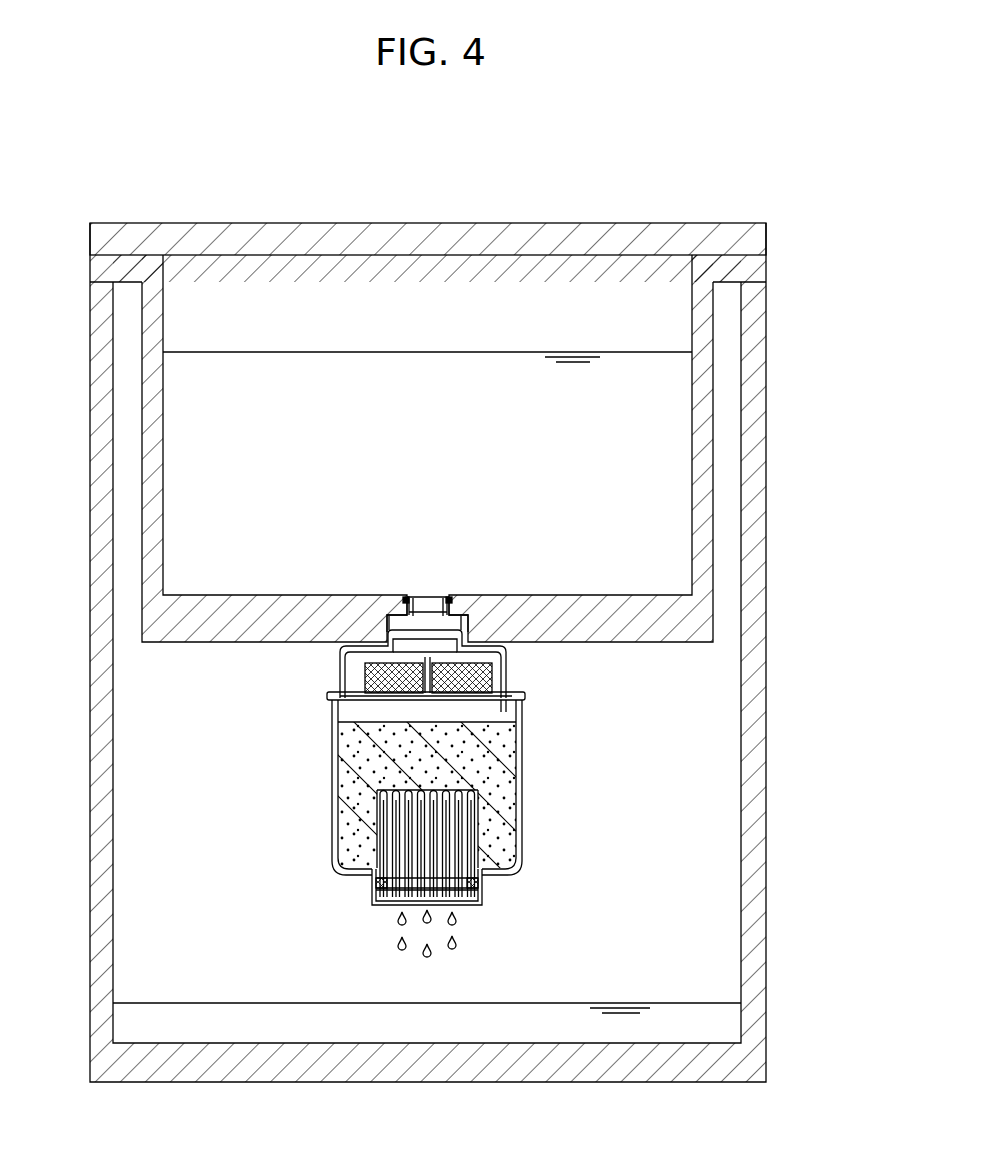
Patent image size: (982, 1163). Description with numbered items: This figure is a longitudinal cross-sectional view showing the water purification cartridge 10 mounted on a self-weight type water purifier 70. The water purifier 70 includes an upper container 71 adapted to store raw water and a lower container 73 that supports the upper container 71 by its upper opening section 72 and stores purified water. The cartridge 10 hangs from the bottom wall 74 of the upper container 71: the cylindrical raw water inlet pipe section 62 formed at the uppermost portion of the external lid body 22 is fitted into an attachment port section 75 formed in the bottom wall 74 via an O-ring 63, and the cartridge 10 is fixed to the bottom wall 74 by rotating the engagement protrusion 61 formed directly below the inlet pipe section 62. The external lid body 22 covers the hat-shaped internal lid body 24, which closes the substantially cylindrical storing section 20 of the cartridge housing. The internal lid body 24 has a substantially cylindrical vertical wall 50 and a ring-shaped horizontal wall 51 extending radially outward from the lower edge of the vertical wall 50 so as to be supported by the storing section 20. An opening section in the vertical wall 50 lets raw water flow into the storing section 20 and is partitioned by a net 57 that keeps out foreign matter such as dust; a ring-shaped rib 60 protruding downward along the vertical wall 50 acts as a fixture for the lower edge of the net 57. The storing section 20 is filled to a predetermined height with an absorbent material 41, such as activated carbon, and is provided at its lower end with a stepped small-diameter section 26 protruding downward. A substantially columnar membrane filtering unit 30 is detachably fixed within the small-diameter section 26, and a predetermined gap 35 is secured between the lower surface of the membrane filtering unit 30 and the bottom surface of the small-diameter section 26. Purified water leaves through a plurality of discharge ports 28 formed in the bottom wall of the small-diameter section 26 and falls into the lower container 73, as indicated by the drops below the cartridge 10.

The water purifier 70 is at (567, 194).
The upper container 71 is at (164, 294).
The upper opening section 72 is at (740, 315).
The lower container 73 is at (735, 718).
The bottom wall 74 is at (660, 598).
The attachment port section 75 is at (429, 596).
The external lid body 22 is at (485, 622).
The internal lid body 24 is at (513, 655).
The vertical wall 50 is at (505, 676).
The horizontal wall 51 is at (510, 718).
The net 57 is at (370, 678).
The rib 60 is at (332, 697).
The engagement protrusion 61 is at (392, 628).
The raw water inlet pipe section 62 is at (386, 627).
The O-ring 63 is at (462, 603).
The water purification cartridge 10 is at (523, 792).
The storing section 20 is at (333, 822).
The absorbent material 41 is at (345, 777).
The membrane filtering unit 30 is at (480, 832).
The small-diameter section 26 is at (482, 890).
The discharge port 28 is at (402, 905).
The gap 35 is at (458, 905).